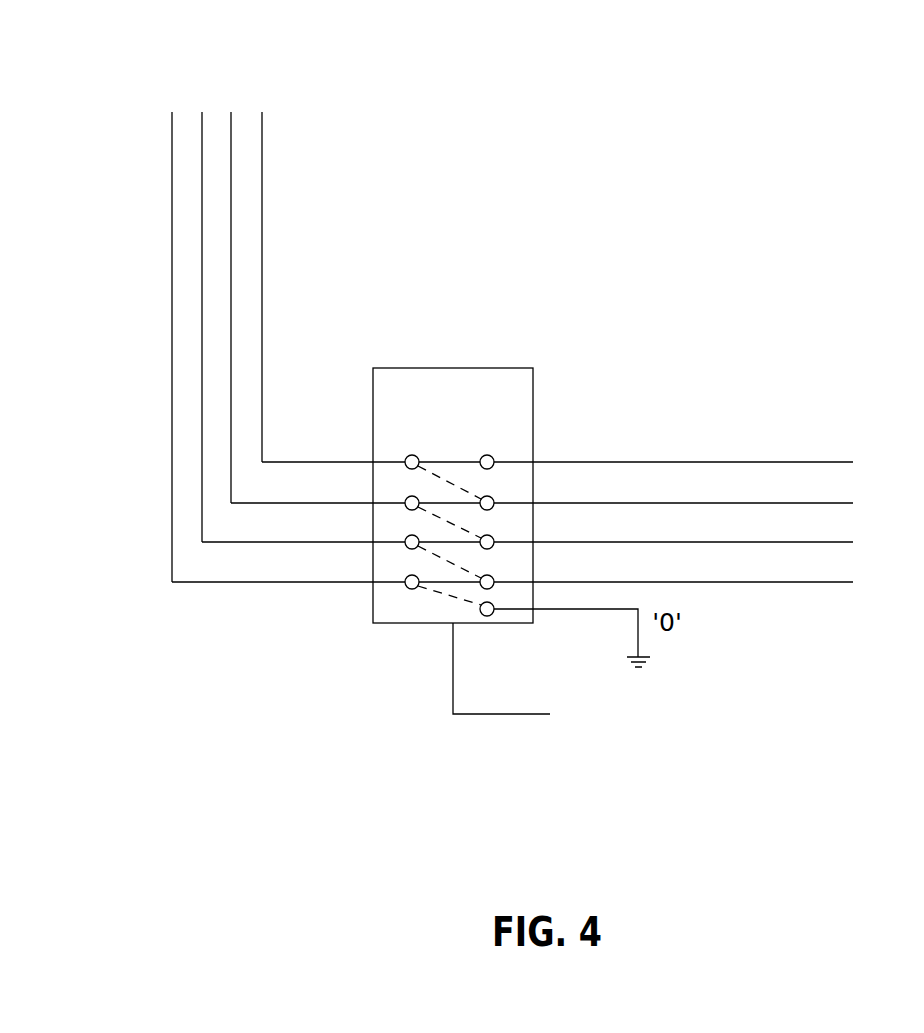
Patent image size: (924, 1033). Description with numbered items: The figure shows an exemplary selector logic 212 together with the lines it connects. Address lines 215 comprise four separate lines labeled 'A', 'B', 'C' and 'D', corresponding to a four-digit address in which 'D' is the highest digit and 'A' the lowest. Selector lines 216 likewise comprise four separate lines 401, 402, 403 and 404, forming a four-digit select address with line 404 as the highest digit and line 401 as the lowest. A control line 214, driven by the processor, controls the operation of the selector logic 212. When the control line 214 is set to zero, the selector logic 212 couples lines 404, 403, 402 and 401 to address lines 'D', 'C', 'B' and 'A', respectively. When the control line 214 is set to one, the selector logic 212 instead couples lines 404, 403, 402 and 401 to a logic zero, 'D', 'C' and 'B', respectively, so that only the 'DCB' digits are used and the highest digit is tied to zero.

The selector line 401 is at (262, 155).
The selector line 402 is at (231, 124).
The selector line 403 is at (202, 120).
The selector line 404 is at (171, 153).
The selector logic 212 is at (432, 423).
The control line 214 is at (483, 714).
The address lines 215 is at (800, 518).
The selector lines 216 is at (263, 518).